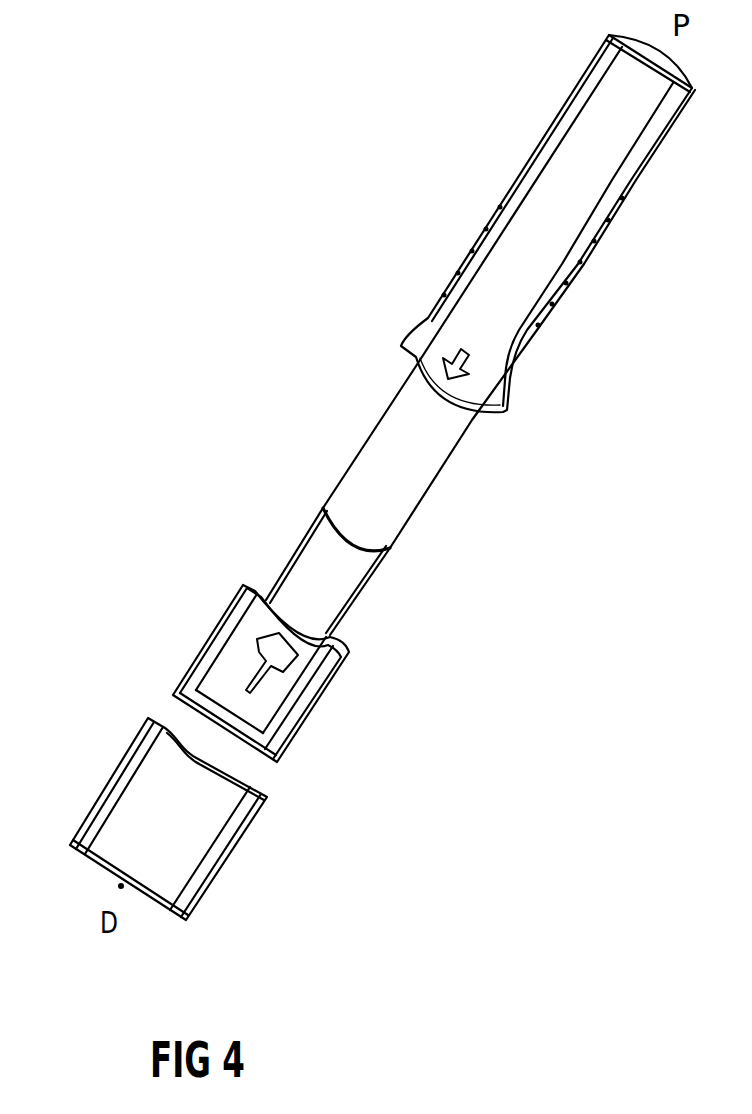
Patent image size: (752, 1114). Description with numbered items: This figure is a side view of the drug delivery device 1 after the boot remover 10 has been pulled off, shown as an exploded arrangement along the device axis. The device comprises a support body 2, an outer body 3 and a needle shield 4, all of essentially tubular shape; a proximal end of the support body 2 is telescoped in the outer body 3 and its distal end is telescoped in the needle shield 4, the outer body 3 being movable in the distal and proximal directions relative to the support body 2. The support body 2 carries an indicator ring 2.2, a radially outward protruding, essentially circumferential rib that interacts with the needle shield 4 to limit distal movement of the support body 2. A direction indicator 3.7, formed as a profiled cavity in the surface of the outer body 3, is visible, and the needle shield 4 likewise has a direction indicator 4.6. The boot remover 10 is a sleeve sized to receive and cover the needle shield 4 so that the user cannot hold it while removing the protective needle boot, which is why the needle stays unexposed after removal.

The drug delivery device 1 is at (288, 342).
The support body 2 is at (451, 362).
The indicator ring 2.2 is at (323, 508).
The outer body 3 is at (498, 277).
The direction indicator 3.7 is at (473, 363).
The needle shield 4 is at (251, 673).
The direction indicator 4.6 is at (278, 658).
The boot remover 10 is at (138, 807).